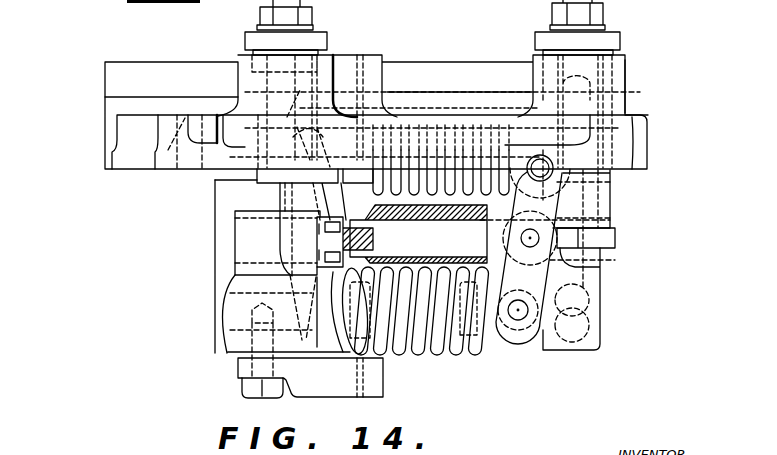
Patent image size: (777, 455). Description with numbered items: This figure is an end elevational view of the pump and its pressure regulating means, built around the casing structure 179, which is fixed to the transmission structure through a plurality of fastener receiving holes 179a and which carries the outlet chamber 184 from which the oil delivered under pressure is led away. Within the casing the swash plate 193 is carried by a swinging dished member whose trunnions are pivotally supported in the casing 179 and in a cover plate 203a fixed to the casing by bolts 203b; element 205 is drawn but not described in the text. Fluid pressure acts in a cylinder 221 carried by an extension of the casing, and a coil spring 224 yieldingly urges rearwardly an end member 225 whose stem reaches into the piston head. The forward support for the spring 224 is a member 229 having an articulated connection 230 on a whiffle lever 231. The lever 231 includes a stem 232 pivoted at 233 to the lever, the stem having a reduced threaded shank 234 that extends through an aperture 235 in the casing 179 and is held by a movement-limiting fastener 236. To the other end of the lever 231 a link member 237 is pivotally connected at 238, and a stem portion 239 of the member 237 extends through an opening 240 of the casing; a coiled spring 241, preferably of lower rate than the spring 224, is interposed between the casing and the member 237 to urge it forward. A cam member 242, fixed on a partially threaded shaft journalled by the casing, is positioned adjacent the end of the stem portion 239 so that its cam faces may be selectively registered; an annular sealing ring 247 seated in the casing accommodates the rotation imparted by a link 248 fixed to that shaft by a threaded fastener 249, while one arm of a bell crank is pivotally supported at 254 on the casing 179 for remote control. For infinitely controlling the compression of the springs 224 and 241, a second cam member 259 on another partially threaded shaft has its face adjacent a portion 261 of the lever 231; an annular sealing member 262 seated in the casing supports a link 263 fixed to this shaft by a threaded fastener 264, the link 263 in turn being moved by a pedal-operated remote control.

The casing structure 179 is at (110, 105).
The fastener receiving holes 179a is at (192, 172).
The outlet chamber 184 is at (627, 88).
The swash plate 193 is at (293, 199).
The cover plate 203a is at (383, 392).
The bolts 203b is at (255, 399).
The support member 205 is at (224, 236).
The cylinder 221 is at (224, 303).
The coil spring 224 is at (433, 356).
The end member 225 is at (352, 398).
The member 229 is at (545, 315).
The articulated connection 230 is at (524, 318).
The whiffle lever 231 is at (553, 203).
The stem 232 is at (494, 203).
The pivot 233 is at (423, 234).
The reduced threaded shank 234 is at (423, 206).
The aperture 235 is at (385, 242).
The movement-limiting fastener 236 is at (343, 231).
The link member 237 is at (548, 202).
The pivotal connection 238 is at (610, 190).
The stem portion 239 is at (460, 141).
The opening 240 is at (372, 118).
The coiled spring 241 is at (500, 141).
The cam member 242 is at (250, 184).
The annular sealing ring 247 is at (330, 55).
The link 248 is at (327, 40).
The threaded fastener 249 is at (306, 16).
The pivot support 254 is at (410, 14).
The cam member 259 is at (611, 238).
The portion of the lever 261 is at (600, 267).
The annular sealing member 262 is at (620, 52).
The link 263 is at (620, 41).
The threaded fastener 264 is at (603, 15).